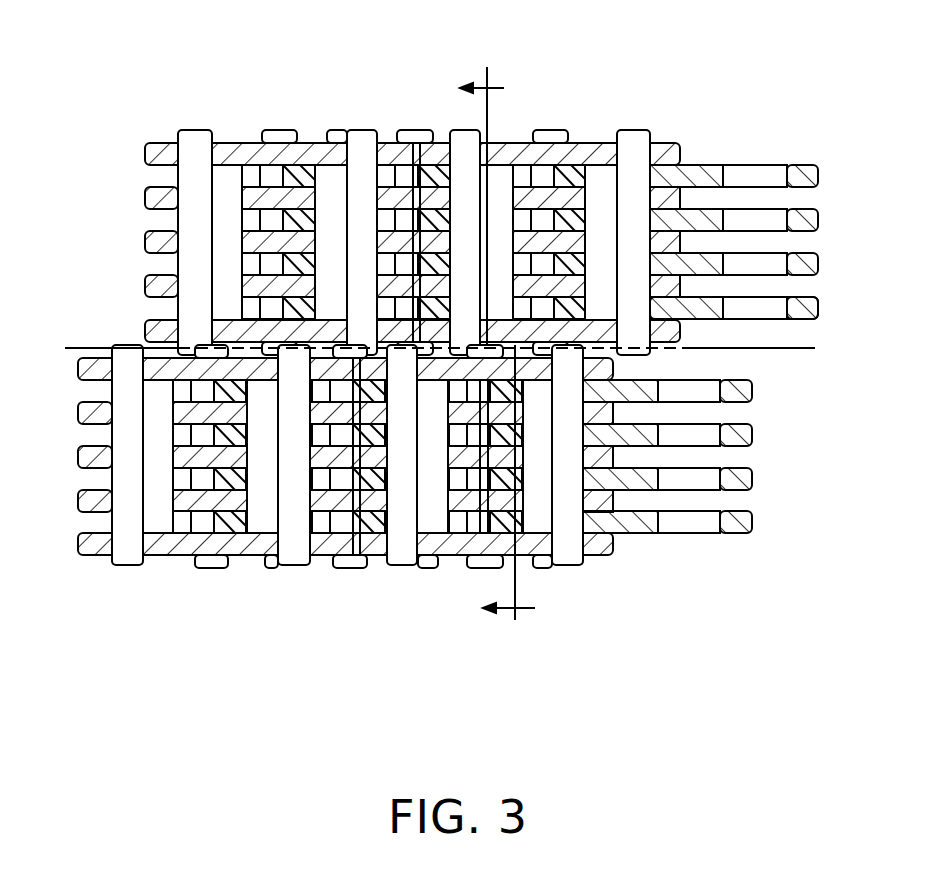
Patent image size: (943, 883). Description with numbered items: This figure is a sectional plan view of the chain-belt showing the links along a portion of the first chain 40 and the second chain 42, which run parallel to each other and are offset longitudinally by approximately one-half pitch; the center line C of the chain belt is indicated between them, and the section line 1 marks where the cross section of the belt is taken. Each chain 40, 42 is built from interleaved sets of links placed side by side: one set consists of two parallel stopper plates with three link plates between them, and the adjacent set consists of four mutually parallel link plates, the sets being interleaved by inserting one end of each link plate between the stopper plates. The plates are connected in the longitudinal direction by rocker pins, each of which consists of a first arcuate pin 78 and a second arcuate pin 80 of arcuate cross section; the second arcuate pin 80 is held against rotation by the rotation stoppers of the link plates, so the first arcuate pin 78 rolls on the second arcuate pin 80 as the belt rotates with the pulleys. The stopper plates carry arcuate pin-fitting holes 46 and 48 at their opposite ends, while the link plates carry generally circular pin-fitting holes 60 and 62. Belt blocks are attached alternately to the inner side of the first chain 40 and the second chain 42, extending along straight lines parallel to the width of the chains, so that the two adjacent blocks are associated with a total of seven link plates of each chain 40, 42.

The first chain 40 is at (410, 503).
The second chain 42 is at (473, 217).
The pin-fitting hole 46 is at (112, 562).
The pin-fitting hole 48 is at (283, 568).
The pin-fitting hole 60 is at (565, 562).
The pin-fitting hole 62 is at (775, 300).
The first arcuate pin 78 is at (596, 503).
The second arcuate pin 80 is at (612, 143).
The section line 1 is at (498, 341).
The center line c is at (450, 348).